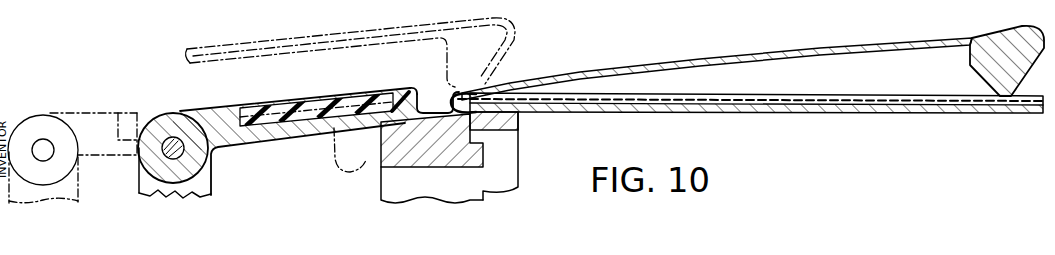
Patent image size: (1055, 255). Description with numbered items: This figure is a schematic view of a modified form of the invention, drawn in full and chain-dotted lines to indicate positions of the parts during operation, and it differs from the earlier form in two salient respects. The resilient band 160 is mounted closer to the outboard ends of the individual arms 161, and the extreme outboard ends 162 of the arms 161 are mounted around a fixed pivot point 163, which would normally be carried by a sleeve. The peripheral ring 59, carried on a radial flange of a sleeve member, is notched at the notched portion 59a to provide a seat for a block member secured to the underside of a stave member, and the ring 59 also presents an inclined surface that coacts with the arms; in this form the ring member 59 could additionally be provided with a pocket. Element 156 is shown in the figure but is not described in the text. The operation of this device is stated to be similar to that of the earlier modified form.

The peripheral ring 59 is at (478, 157).
The notched portion 59a is at (382, 152).
The spring clip 156 is at (1039, 54).
The resilient band 160 is at (316, 104).
The individual arms 161 is at (884, 43).
The extreme outboard ends 162 is at (50, 118).
The fixed pivot point 163 is at (167, 155).